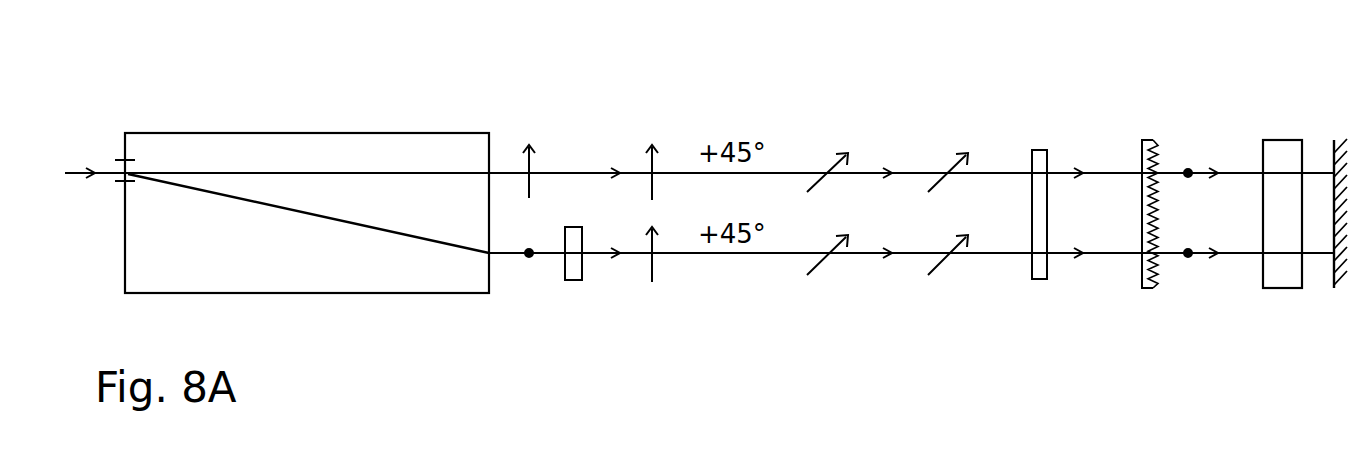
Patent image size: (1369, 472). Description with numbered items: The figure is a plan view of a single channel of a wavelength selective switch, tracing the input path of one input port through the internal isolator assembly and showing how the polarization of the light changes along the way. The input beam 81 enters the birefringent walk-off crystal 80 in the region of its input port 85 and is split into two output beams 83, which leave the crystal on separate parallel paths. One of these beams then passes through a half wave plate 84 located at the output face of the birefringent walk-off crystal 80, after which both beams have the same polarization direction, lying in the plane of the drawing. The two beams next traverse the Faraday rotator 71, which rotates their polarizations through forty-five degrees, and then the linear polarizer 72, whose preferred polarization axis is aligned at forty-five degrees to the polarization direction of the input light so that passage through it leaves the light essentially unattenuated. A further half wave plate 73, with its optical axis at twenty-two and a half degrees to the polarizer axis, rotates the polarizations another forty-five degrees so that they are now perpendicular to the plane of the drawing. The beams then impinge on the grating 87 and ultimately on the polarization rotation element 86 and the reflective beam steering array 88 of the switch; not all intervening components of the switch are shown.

The birefringent walk-off crystal 80 is at (388, 293).
The input beam 81 is at (65, 167).
The input port 85 is at (122, 178).
The output beams 83 is at (528, 158).
The half wave plate 84 is at (575, 282).
The Faraday rotator 71 is at (741, 281).
The linear polarizer 72 is at (897, 281).
The half wave plate 73 is at (1046, 301).
The grating 87 is at (1152, 145).
The polarization rotation element 86 is at (1283, 290).
The reflective beam steering array 88 is at (1340, 290).